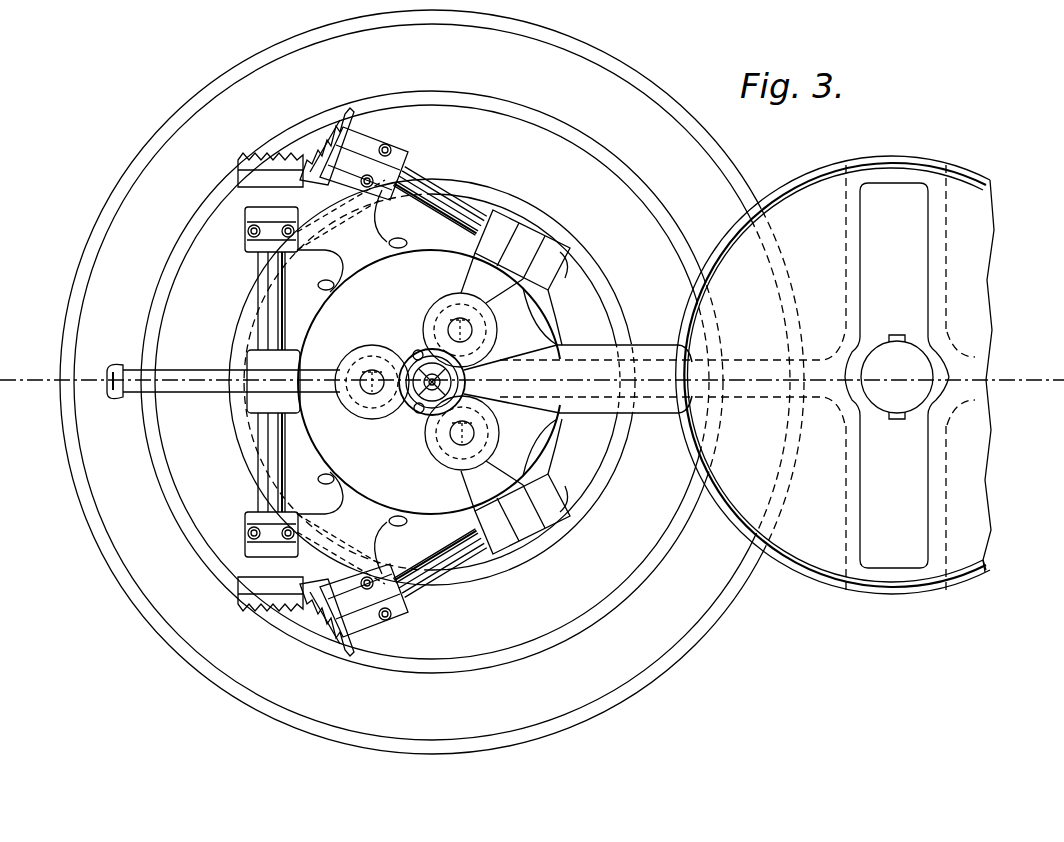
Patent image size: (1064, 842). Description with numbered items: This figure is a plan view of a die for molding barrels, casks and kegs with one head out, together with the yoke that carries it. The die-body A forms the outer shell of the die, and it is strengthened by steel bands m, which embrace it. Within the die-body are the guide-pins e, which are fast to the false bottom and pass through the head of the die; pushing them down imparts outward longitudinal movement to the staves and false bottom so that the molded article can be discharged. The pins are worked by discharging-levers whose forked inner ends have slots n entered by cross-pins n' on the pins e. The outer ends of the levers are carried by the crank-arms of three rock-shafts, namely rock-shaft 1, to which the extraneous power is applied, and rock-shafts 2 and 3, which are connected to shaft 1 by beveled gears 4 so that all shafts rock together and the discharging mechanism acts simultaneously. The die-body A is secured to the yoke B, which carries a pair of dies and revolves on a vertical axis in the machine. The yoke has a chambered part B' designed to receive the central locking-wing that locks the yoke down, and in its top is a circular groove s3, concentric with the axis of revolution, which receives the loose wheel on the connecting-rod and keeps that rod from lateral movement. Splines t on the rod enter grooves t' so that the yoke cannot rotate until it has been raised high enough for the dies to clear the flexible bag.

The die-body A is at (402, 382).
The steel bands m is at (676, 89).
The rock-shaft 1 is at (271, 382).
The rock-shaft 2 is at (417, 184).
The rock-shaft 3 is at (443, 570).
The beveled gears 4 is at (323, 382).
The guide-pins e is at (417, 381).
The slots n is at (438, 382).
The cross-pins n' is at (417, 382).
The yoke B is at (850, 375).
The chambered part B' is at (897, 375).
The splines t is at (897, 374).
The grooves t' is at (897, 408).
The circular groove s3 is at (977, 583).